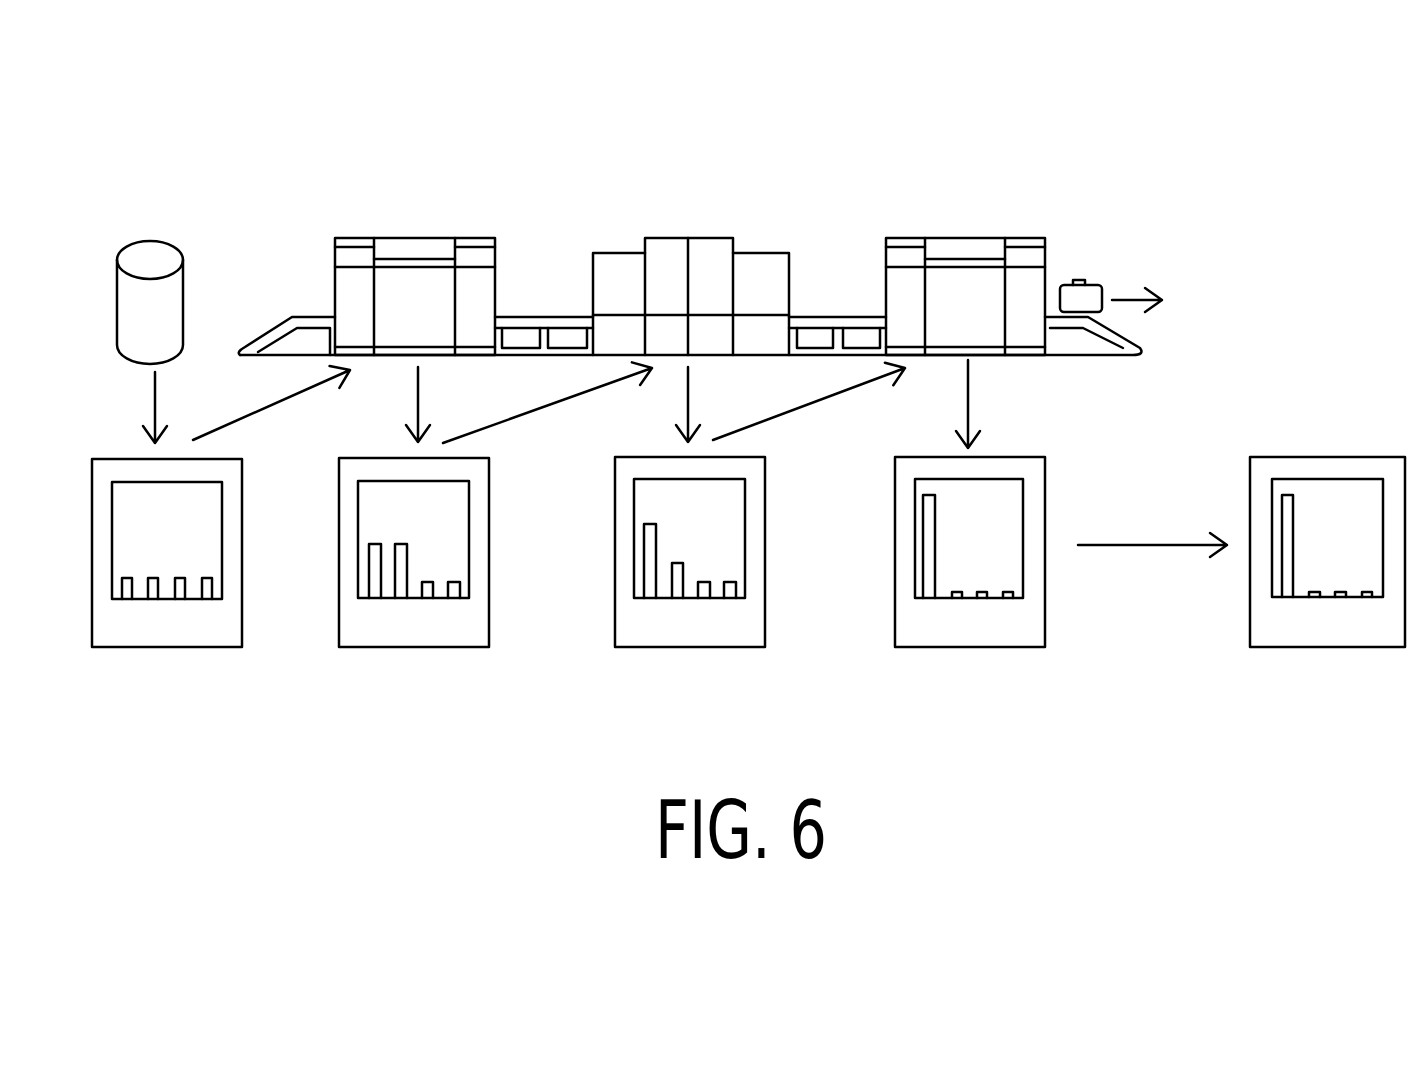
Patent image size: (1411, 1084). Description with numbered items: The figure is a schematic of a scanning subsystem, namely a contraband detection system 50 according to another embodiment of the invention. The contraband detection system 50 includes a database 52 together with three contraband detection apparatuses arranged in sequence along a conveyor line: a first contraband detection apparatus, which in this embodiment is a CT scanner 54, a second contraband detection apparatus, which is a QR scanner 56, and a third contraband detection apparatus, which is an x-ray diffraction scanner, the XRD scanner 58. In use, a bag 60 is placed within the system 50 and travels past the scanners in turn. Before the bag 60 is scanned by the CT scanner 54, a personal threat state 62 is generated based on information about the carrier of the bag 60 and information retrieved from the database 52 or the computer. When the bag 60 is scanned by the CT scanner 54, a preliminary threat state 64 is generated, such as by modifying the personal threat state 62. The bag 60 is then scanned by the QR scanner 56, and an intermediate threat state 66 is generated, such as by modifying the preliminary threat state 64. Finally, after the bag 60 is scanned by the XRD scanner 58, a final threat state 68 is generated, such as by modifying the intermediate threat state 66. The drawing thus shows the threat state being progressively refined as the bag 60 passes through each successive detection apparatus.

The contraband detection system 50 is at (700, 188).
The database 52 is at (158, 238).
The CT scanner 54 is at (427, 238).
The QR scanner 56 is at (718, 238).
The XRD scanner 58 is at (972, 245).
The bag 60 is at (1098, 285).
The personal threat state 62 is at (158, 648).
The preliminary threat state 64 is at (407, 647).
The intermediate threat state 66 is at (690, 647).
The final threat state 68 is at (965, 647).